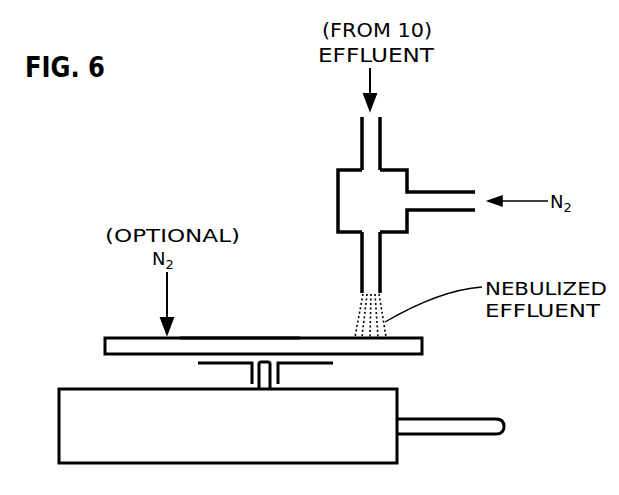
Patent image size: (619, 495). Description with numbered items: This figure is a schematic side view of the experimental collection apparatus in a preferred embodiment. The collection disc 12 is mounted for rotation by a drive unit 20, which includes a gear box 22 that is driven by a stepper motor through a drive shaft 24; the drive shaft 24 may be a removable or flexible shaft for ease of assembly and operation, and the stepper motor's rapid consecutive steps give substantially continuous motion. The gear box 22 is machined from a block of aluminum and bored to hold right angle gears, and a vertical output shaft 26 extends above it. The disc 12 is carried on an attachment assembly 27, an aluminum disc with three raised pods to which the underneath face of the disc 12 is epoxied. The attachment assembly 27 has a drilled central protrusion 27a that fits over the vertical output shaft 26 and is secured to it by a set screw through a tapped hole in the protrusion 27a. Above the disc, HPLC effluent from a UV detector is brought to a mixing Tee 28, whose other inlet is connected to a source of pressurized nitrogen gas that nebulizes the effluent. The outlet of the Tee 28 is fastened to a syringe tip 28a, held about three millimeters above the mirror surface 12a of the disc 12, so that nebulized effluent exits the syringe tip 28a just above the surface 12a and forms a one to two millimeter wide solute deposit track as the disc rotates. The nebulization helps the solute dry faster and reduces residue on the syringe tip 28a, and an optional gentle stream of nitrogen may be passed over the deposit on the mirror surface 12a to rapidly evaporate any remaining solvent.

The disc 12 is at (105, 350).
The mirror surface 12a is at (247, 338).
The drive unit 20 is at (499, 393).
The gear box 22 is at (128, 435).
The drive shaft 24 is at (450, 435).
The vertical output shaft 26 is at (265, 381).
The attachment assembly 27 is at (326, 364).
The central protrusion 27a is at (250, 376).
The mixing Tee 28 is at (338, 202).
The syringe tip 28a is at (362, 291).